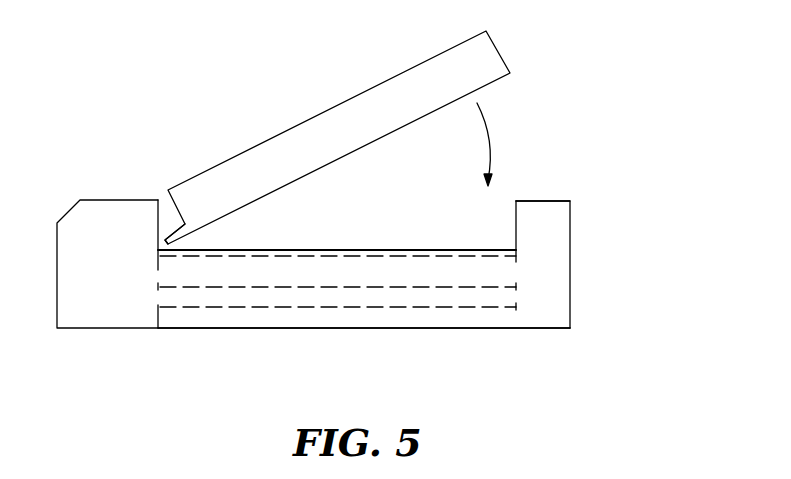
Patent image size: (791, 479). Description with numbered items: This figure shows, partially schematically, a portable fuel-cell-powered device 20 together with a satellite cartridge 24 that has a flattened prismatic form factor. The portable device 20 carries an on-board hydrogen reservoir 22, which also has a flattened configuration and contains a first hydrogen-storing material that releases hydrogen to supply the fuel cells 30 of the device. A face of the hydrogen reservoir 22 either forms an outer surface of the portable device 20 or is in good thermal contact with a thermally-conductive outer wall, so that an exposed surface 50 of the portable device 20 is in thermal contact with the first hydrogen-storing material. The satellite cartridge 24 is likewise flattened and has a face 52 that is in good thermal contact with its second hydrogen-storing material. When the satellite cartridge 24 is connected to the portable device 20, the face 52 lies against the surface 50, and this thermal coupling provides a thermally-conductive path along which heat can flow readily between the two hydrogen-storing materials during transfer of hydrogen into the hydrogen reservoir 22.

The portable fuel-cell-powered device 20 is at (570, 266).
The on-board hydrogen reservoir 22 is at (517, 287).
The satellite cartridge 24 is at (500, 50).
The fuel cells 30 is at (453, 328).
The exposed surface 50 is at (405, 250).
The face 52 is at (298, 187).